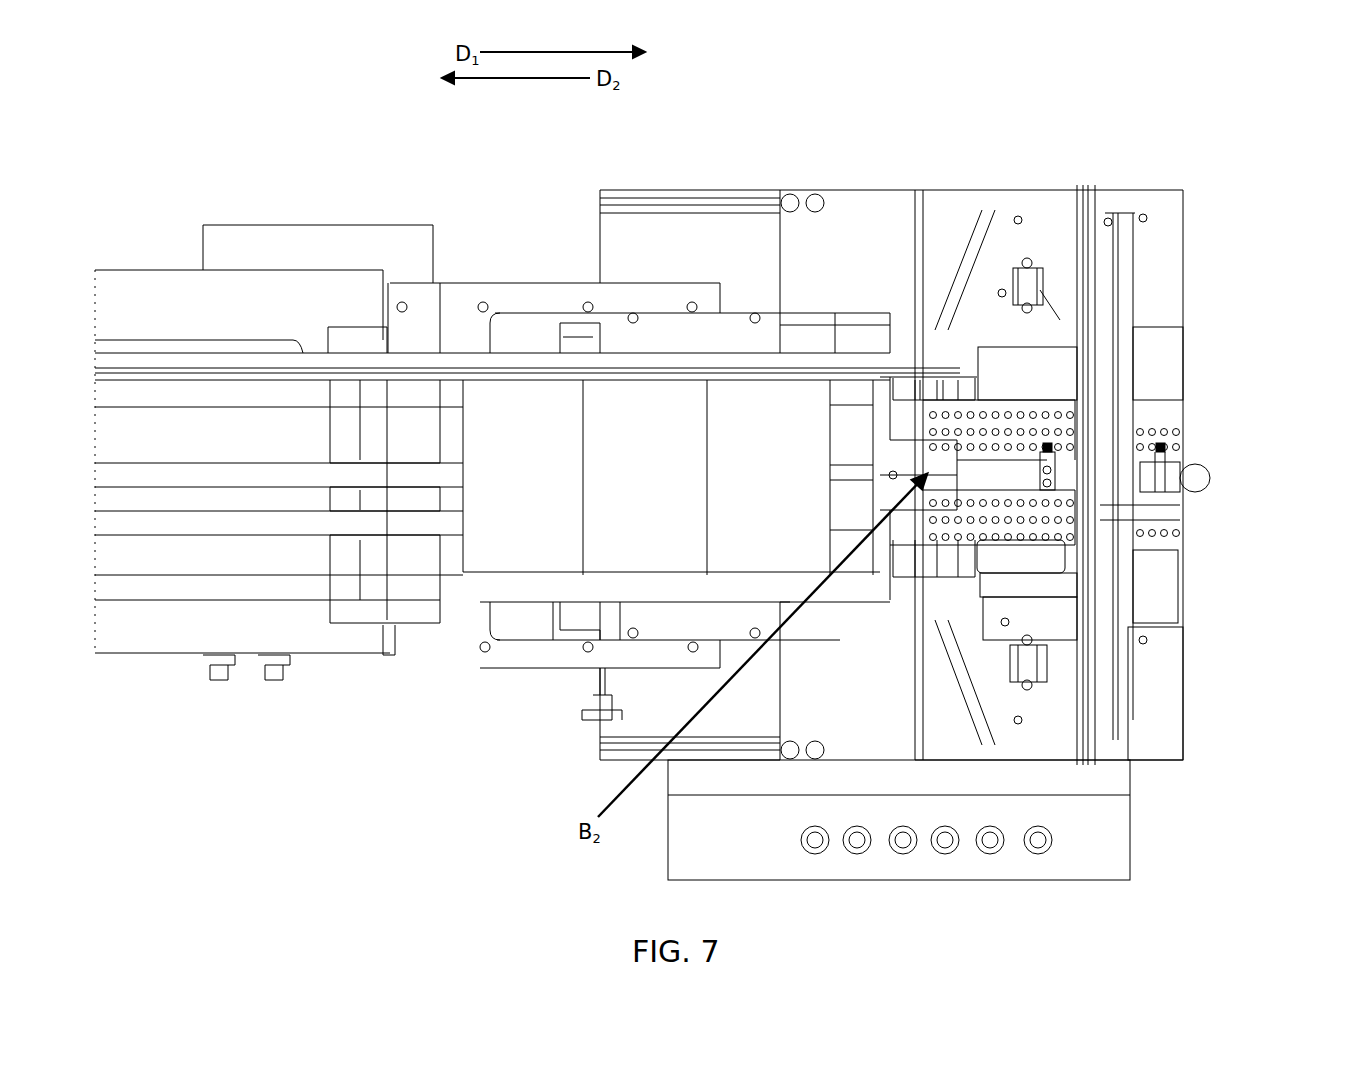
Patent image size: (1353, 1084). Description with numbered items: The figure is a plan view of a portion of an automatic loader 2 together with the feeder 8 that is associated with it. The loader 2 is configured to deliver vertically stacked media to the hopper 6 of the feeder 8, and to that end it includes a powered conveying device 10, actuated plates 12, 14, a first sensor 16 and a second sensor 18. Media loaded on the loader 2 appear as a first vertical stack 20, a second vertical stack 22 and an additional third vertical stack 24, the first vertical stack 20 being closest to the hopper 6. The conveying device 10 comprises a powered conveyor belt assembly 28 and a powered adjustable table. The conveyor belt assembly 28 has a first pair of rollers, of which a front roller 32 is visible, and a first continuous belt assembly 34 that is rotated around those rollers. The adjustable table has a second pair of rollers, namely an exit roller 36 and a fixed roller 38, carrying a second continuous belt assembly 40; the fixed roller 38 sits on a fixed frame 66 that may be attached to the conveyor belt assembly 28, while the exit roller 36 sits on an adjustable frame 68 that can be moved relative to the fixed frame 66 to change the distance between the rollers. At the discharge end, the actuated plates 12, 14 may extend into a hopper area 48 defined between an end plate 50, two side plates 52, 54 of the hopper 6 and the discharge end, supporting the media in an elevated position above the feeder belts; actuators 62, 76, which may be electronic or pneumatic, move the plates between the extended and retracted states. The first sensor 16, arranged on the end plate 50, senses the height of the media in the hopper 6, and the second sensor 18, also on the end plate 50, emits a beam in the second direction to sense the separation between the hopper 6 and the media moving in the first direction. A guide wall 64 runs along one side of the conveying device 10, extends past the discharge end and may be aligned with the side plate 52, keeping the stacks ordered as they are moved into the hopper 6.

The automatic loader 2 is at (300, 825).
The hopper 6 is at (1062, 320).
The feeder 8 is at (1158, 225).
The powered conveying device 10 is at (185, 183).
The actuated plate 12 is at (1030, 393).
The actuated plate 14 is at (1040, 555).
The first sensor 16 is at (1048, 465).
The second sensor 18 is at (1153, 468).
The first vertical stack 20 is at (758, 453).
The second vertical stack 22 is at (643, 458).
The third vertical stack 24 is at (532, 468).
The powered conveyor belt assembly 28 is at (268, 305).
The front roller 32 is at (352, 430).
The first continuous belt assembly 34 is at (149, 392).
The exit roller 36 is at (853, 433).
The fixed roller 38 is at (418, 440).
The second continuous belt assembly 40 is at (402, 393).
The hopper area 48 is at (978, 517).
The end plate 50 is at (1072, 487).
The side plate 52 is at (1003, 357).
The side plate 54 is at (1002, 583).
The actuator 62 is at (1015, 620).
The guide wall 64 is at (902, 372).
The fixed frame 66 is at (452, 650).
The adjustable frame 68 is at (690, 623).
The actuator 76 is at (1017, 325).